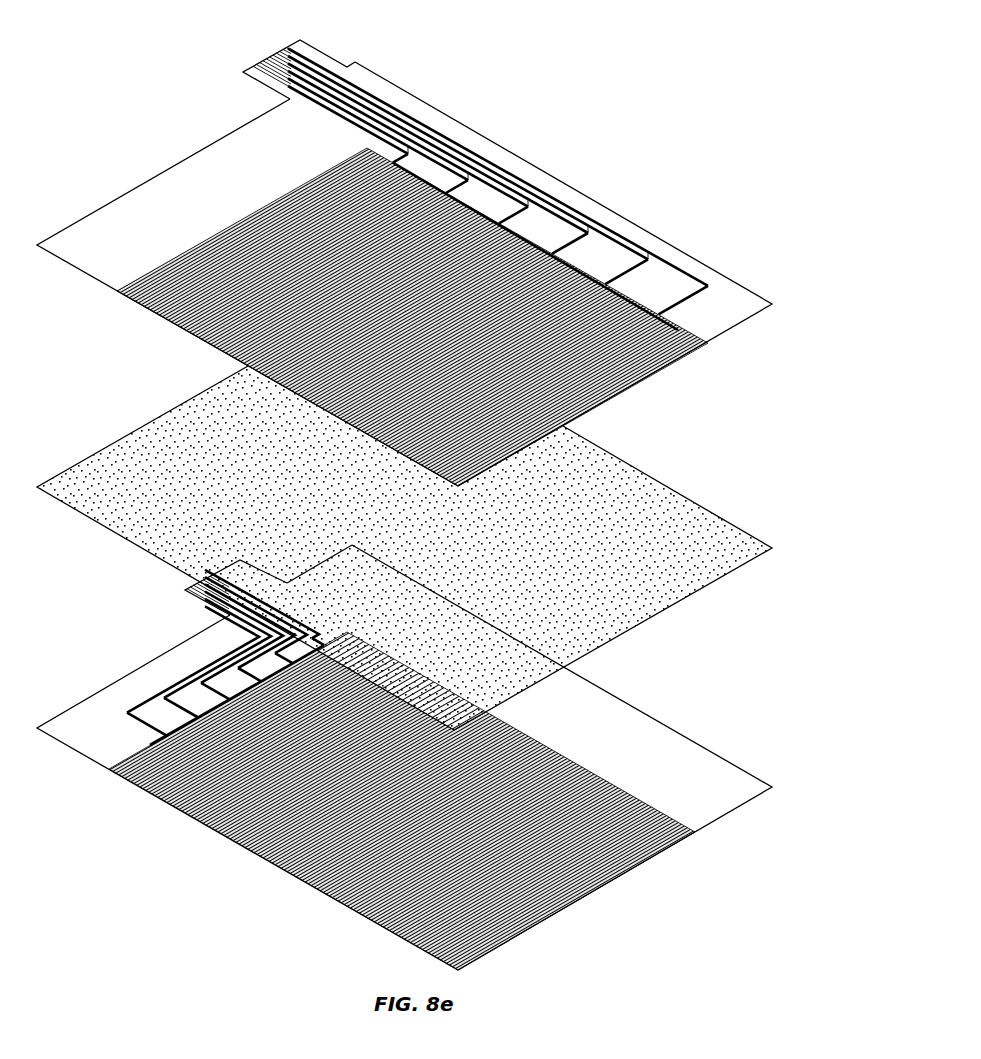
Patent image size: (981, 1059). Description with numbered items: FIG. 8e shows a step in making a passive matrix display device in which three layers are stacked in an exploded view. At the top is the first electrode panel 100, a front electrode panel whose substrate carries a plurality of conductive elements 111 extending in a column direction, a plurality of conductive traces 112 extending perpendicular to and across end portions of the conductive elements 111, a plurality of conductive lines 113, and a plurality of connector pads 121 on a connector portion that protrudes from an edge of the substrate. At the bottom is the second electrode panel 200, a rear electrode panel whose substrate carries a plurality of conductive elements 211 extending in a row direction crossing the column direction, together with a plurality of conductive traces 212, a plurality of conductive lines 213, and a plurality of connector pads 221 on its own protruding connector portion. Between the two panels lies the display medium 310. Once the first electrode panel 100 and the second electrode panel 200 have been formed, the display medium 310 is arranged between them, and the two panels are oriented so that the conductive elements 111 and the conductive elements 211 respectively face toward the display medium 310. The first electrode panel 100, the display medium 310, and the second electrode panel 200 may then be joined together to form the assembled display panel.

The first electrode panel 100 is at (769, 270).
The conductive elements 111 is at (592, 400).
The conductive traces 112 is at (673, 318).
The conductive lines 113 is at (613, 232).
The connector pads 121 is at (290, 60).
The second electrode panel 200 is at (769, 756).
The conductive elements 211 is at (592, 880).
The conductive traces 212 is at (143, 745).
The conductive lines 213 is at (178, 690).
The connector pads 221 is at (188, 590).
The display medium 310 is at (769, 513).